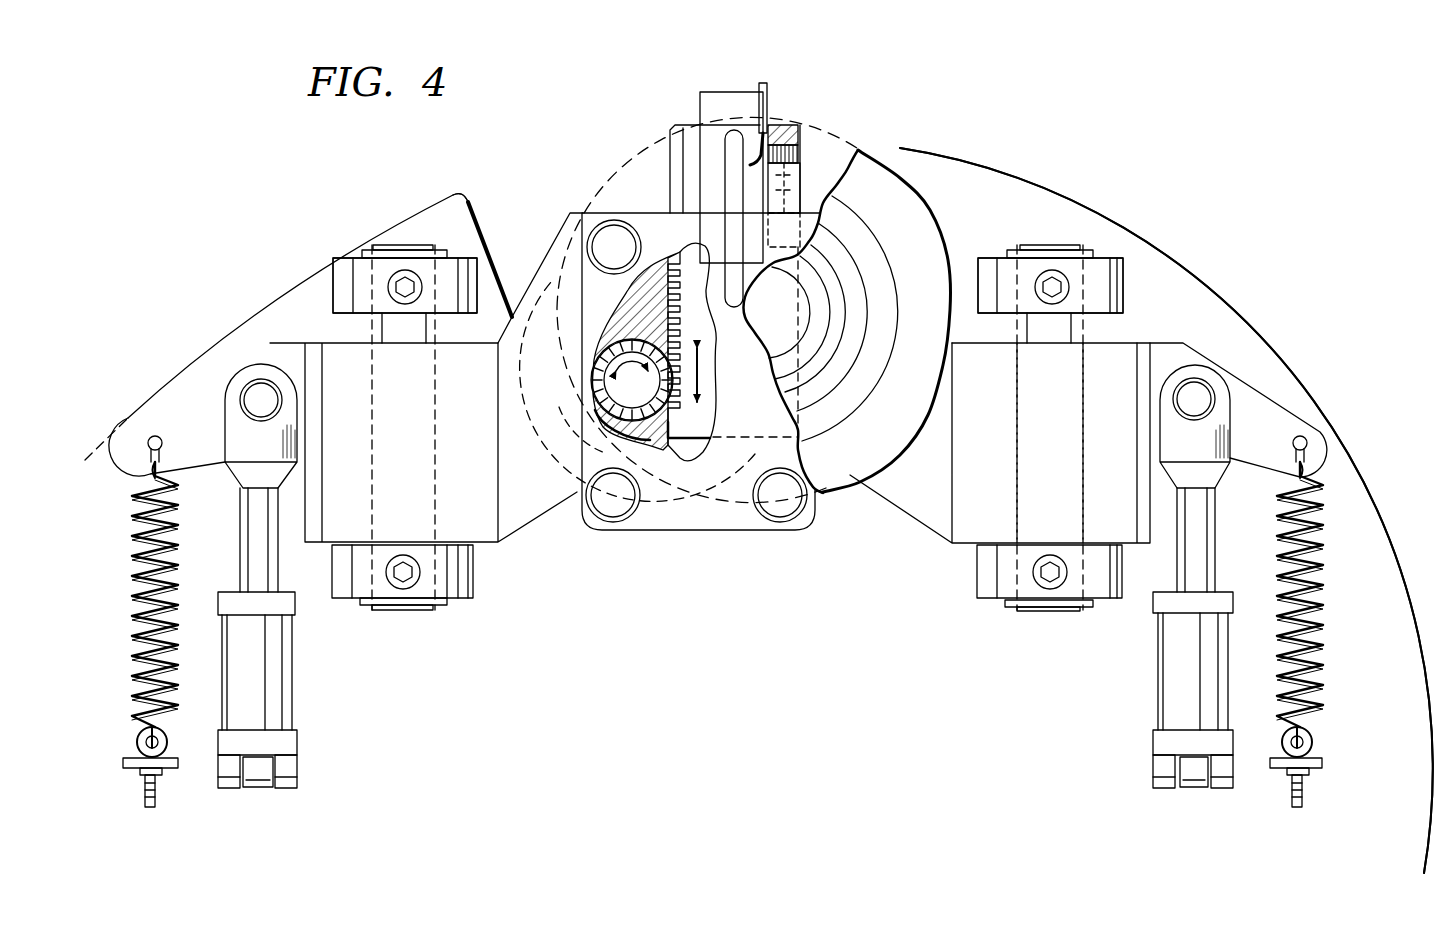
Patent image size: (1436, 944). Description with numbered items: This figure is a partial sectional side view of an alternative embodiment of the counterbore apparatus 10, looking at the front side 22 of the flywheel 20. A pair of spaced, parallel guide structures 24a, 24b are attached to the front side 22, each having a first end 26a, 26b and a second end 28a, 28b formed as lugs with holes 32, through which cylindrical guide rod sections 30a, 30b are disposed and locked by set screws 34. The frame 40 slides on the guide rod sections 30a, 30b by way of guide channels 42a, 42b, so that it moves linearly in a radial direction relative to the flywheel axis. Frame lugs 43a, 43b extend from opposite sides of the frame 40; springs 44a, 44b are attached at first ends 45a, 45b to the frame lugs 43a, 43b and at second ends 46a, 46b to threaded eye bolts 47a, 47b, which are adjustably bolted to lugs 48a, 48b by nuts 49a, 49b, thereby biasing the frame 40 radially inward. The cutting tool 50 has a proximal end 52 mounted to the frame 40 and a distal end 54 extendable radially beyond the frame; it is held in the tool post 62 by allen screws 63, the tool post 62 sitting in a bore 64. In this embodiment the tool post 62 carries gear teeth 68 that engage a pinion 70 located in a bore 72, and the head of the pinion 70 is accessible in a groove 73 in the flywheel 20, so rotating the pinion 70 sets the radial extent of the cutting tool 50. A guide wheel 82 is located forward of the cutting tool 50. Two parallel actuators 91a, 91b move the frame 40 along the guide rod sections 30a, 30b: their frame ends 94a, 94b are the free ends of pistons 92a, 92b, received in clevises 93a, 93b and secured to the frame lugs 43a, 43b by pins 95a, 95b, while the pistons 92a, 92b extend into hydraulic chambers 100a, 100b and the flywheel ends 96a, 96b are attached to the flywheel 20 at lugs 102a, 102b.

The counterbore apparatus 10 is at (570, 88).
The flywheel 20 is at (1175, 205).
The front side 22 is at (1166, 510).
The guide structure 24a is at (985, 260).
The guide structure 24b is at (347, 262).
The first end 26a is at (1110, 285).
The first end 26b is at (338, 290).
The second end 28a is at (977, 573).
The second end 28b is at (478, 575).
The guide rod section 30a is at (1050, 250).
The guide rod section 30b is at (415, 250).
The holes 32 is at (378, 250).
The set screws 34 is at (408, 303).
The frame 40 is at (972, 468).
The guide channel 42a is at (1085, 430).
The guide channel 42b is at (435, 430).
The frame lug 43a is at (1262, 408).
The frame lug 43b is at (170, 410).
The spring 44a is at (1325, 630).
The spring 44b is at (130, 632).
The first end 45a is at (1330, 472).
The first end 45b is at (165, 475).
The second end 46a is at (1312, 722).
The second end 46b is at (165, 722).
The threaded eye bolt 47a is at (1285, 732).
The threaded eye bolt 47b is at (138, 732).
The lug 48a is at (1322, 763).
The lug 48b is at (125, 766).
The nut 49a is at (1305, 795).
The nut 49b is at (158, 795).
The cutting tool 50 is at (735, 100).
The proximal end 52 is at (772, 290).
The distal end 54 is at (770, 95).
The tool post 62 is at (670, 180).
The allen screws 63 is at (800, 145).
The bore 64 is at (637, 460).
The gear teeth 68 is at (692, 352).
The pinion 70 is at (600, 405).
The bore 72 is at (615, 440).
The groove 73 is at (488, 225).
The guide wheel 82 is at (880, 158).
The actuator 91a is at (1225, 588).
The actuator 91b is at (236, 588).
The piston 92a is at (1170, 565).
The piston 92b is at (288, 538).
The clevis 93a is at (1232, 452).
The clevis 93b is at (225, 445).
The frame end 94a is at (1225, 470).
The frame end 94b is at (300, 480).
The pin 95a is at (1195, 400).
The pin 95b is at (258, 398).
The flywheel end 96a is at (1153, 742).
The flywheel end 96b is at (298, 745).
The hydraulic chamber 100a is at (1158, 670).
The hydraulic chamber 100b is at (292, 672).
The lug 102a is at (1194, 790).
The lug 102b is at (263, 790).